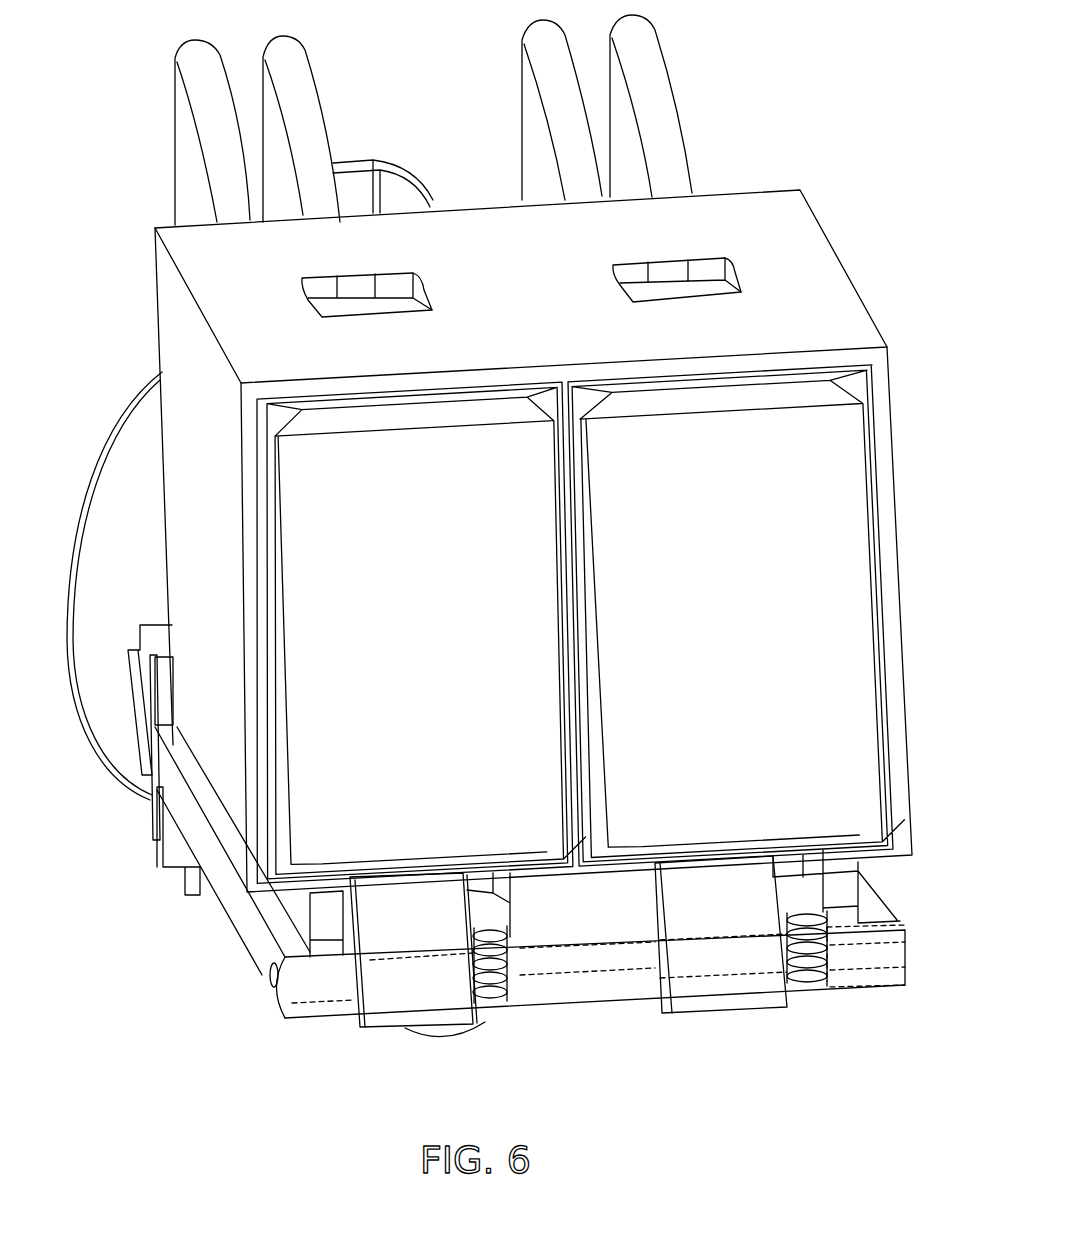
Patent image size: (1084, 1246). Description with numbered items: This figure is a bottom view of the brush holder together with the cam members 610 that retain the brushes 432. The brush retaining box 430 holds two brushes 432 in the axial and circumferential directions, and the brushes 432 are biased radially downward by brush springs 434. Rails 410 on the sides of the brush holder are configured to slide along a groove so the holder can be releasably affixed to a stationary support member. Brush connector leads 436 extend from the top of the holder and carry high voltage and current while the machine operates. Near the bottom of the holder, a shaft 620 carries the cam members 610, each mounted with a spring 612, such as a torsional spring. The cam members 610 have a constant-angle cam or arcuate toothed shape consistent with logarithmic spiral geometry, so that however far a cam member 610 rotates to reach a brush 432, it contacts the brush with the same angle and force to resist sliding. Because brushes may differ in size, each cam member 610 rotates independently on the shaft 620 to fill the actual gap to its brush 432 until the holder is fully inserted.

The rail 410 is at (180, 803).
The brush retaining box 430 is at (553, 301).
The brush 432 is at (457, 651).
The brush spring 434 is at (330, 893).
The brush connector lead 436 is at (180, 43).
The cam member 610 is at (390, 1027).
The spring 612 is at (493, 1022).
The shaft 620 is at (586, 968).